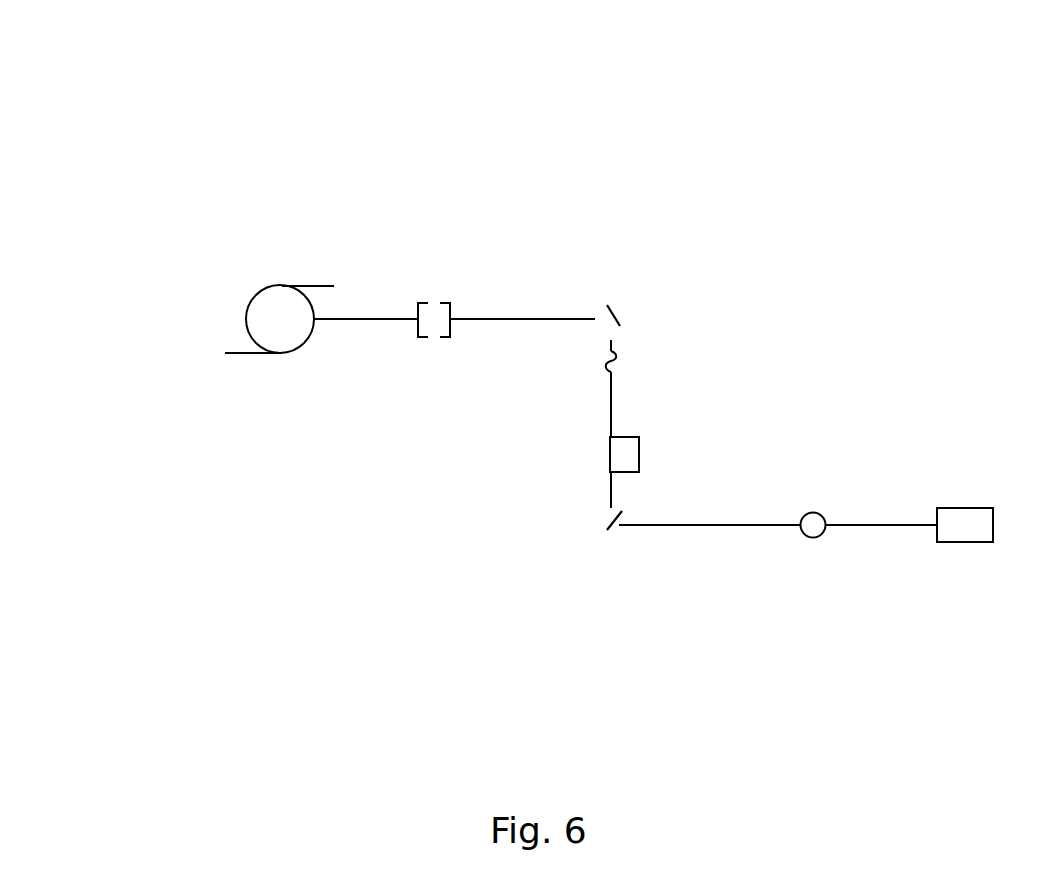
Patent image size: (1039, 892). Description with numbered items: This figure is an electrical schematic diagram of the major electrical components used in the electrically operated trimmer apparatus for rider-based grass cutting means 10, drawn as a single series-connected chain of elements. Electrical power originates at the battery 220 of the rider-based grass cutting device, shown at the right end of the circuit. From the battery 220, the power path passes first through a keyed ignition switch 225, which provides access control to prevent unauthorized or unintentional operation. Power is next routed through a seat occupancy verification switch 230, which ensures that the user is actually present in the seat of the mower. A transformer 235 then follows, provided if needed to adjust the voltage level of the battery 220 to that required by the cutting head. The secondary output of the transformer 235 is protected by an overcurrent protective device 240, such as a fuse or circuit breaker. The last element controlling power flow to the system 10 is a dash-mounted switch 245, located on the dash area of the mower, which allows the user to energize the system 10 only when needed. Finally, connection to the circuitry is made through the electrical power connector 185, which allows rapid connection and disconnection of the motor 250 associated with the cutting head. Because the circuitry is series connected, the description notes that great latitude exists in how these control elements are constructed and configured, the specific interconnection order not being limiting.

The electrically operated trimmer apparatus for rider-based grass cutting means 10 is at (130, 112).
The electrical power connector 185 is at (443, 313).
The battery 220 is at (968, 508).
The keyed ignition switch 225 is at (805, 536).
The seat occupancy verification switch 230 is at (611, 538).
The transformer 235 is at (639, 448).
The overcurrent protective device 240 is at (605, 362).
The dash-mounted switch 245 is at (620, 308).
The motor 250 is at (300, 349).